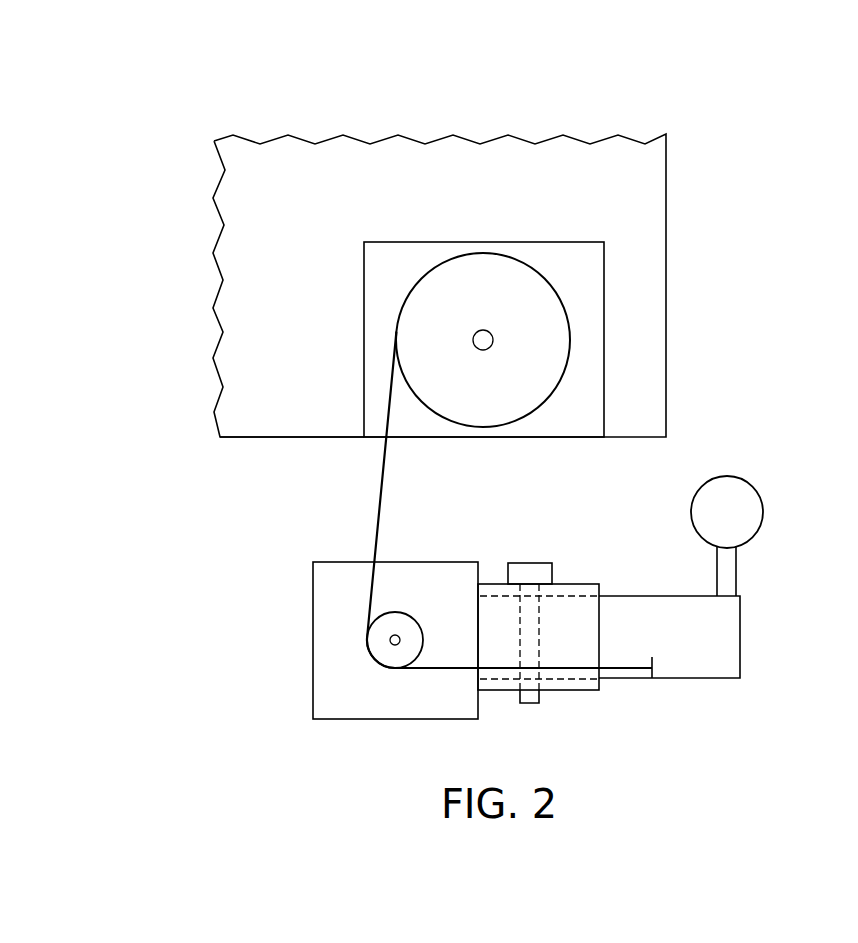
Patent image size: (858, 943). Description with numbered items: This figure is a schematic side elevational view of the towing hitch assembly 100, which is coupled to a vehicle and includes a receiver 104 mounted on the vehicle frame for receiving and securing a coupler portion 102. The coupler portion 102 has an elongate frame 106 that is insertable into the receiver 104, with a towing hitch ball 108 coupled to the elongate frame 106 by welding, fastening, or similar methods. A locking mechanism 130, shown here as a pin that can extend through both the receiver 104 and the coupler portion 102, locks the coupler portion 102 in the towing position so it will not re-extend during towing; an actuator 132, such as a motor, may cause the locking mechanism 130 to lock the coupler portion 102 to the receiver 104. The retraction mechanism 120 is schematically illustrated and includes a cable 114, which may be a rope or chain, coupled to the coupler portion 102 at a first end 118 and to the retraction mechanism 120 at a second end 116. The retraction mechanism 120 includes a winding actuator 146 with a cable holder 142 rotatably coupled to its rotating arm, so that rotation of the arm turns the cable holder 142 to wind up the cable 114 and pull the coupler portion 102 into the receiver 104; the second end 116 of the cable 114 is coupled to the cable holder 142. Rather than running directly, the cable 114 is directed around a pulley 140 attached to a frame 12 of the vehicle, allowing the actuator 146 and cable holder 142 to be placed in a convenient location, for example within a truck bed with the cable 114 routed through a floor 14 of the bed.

The towing hitch assembly 100 is at (732, 112).
The retraction mechanism 120 is at (166, 189).
The floor 14 is at (248, 437).
The actuator 146 is at (380, 242).
The cable holder 142 is at (484, 252).
The second end 116 is at (393, 338).
The frame 12 is at (313, 582).
The pulley 140 is at (366, 640).
The cable 114 is at (424, 682).
The locking mechanism 130 is at (590, 560).
The actuator 132 is at (517, 562).
The receiver 104 is at (502, 690).
The elongate frame 106 is at (726, 680).
The first end 118 is at (655, 662).
The coupler portion 102 is at (774, 454).
The towing hitch ball 108 is at (763, 513).